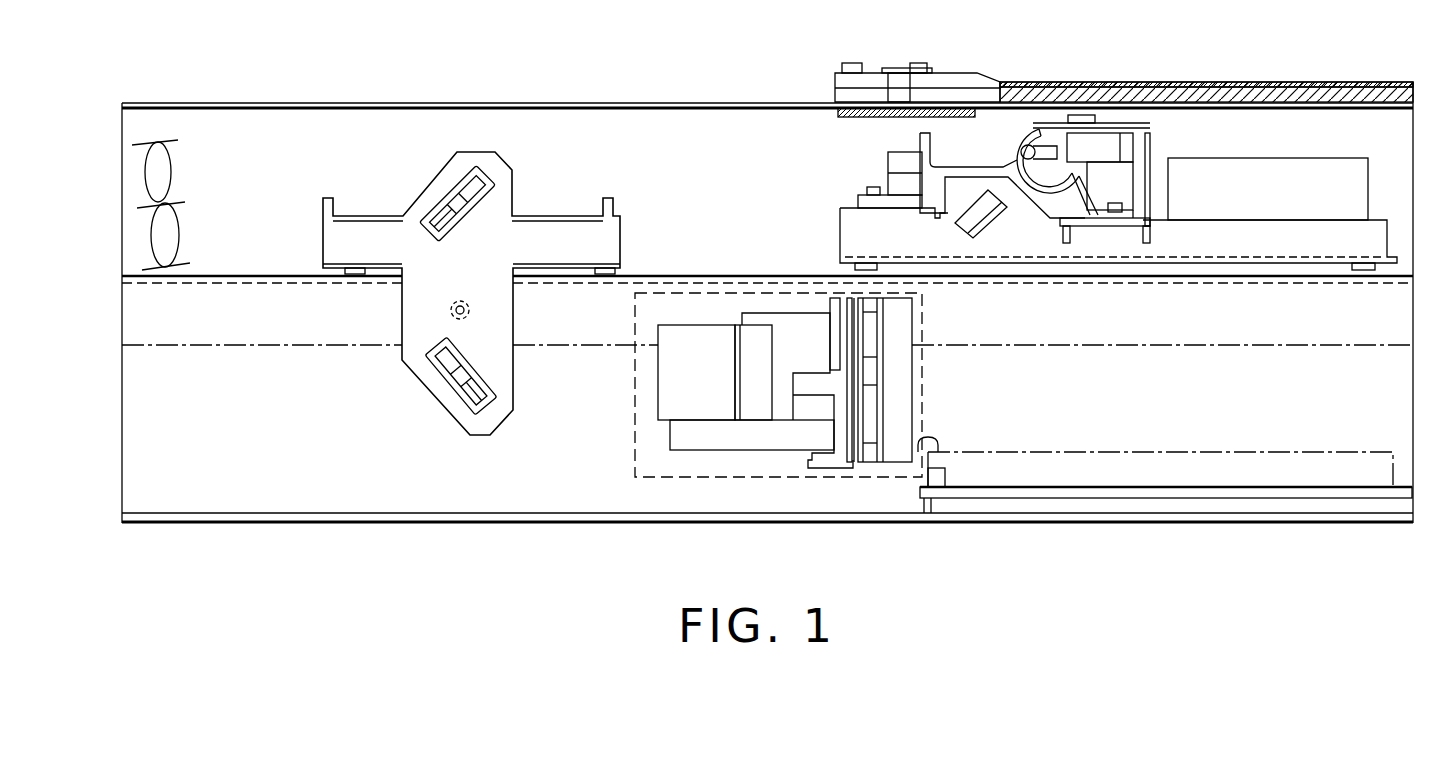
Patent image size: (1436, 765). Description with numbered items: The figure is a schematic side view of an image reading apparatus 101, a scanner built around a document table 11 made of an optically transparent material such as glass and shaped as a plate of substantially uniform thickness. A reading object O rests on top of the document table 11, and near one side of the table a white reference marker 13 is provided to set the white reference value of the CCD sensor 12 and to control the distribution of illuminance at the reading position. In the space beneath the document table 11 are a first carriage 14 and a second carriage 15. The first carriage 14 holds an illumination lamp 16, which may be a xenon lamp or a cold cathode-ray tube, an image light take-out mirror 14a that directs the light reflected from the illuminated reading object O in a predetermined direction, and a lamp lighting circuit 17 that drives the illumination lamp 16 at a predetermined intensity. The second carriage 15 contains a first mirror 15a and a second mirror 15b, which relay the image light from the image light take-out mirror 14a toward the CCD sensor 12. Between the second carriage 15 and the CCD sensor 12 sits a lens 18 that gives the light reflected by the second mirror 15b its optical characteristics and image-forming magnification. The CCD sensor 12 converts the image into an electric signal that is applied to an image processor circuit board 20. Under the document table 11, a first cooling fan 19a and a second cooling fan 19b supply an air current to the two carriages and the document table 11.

The image reading apparatus 101 is at (724, 74).
The white reference marker 13 is at (838, 118).
The reading object O is at (1118, 83).
The document table 11 is at (1228, 100).
The lamp lighting circuit 17 is at (1312, 158).
The illumination lamp 16 is at (1021, 152).
The second carriage 15 is at (471, 291).
The first mirror 15a is at (447, 202).
The second mirror 15b is at (458, 370).
The first cooling fan 19a is at (186, 238).
The second cooling fan 19b is at (170, 303).
The lens 18 is at (663, 388).
The CCD sensor 12 is at (905, 413).
The first carriage 14 is at (1118, 221).
The image light take-out mirror 14a is at (962, 230).
The image processor circuit board 20 is at (1270, 452).